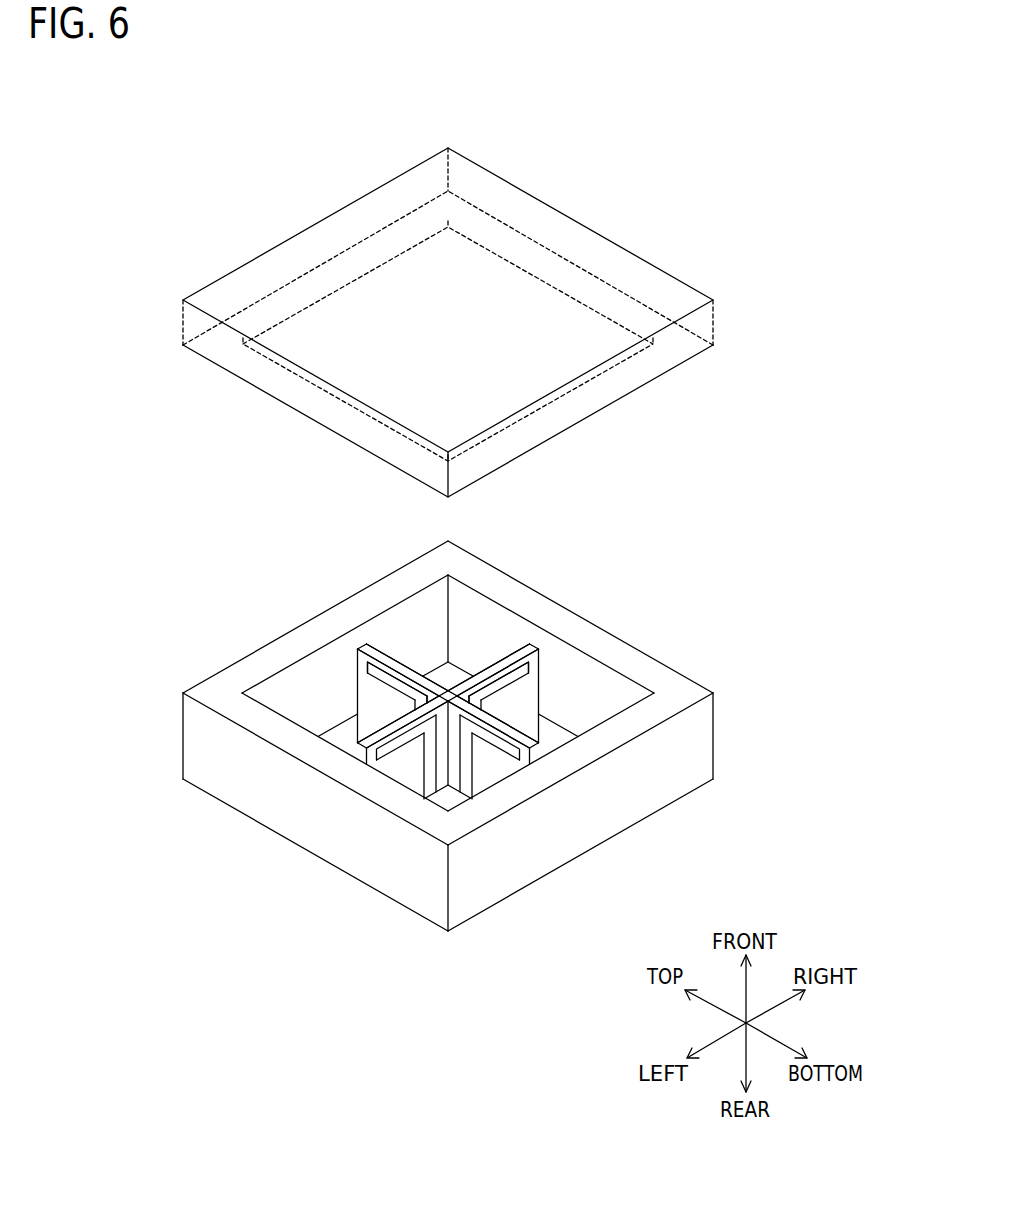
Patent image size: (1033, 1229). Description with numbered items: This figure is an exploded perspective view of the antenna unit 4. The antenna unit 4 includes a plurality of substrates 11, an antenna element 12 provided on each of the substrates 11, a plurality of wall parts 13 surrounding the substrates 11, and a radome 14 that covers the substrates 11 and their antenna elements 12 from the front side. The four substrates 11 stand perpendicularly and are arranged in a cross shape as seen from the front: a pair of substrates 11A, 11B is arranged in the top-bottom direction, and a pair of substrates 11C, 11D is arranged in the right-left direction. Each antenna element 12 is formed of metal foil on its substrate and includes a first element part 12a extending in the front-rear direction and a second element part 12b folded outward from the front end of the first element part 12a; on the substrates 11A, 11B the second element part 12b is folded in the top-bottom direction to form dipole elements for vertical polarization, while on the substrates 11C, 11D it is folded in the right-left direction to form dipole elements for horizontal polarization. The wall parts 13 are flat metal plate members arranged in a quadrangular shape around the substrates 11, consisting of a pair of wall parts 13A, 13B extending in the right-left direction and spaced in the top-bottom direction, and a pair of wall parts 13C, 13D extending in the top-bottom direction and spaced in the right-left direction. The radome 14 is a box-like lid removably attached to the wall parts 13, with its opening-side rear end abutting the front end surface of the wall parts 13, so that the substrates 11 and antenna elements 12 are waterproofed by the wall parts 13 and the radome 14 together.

The antenna unit 4 is at (673, 188).
The radome 14 is at (260, 254).
The wall parts 13 is at (448, 753).
The wall part 13A is at (305, 637).
The wall part 13B is at (663, 788).
The wall part 13C is at (233, 788).
The wall part 13D is at (591, 637).
The substrates 11 is at (448, 721).
The substrate 11A is at (392, 665).
The substrate 11B is at (541, 754).
The substrate 11C is at (355, 754).
The substrate 11D is at (504, 665).
The antenna element 12 is at (385, 679).
The first element part 12a is at (428, 779).
The second element part 12b is at (385, 758).